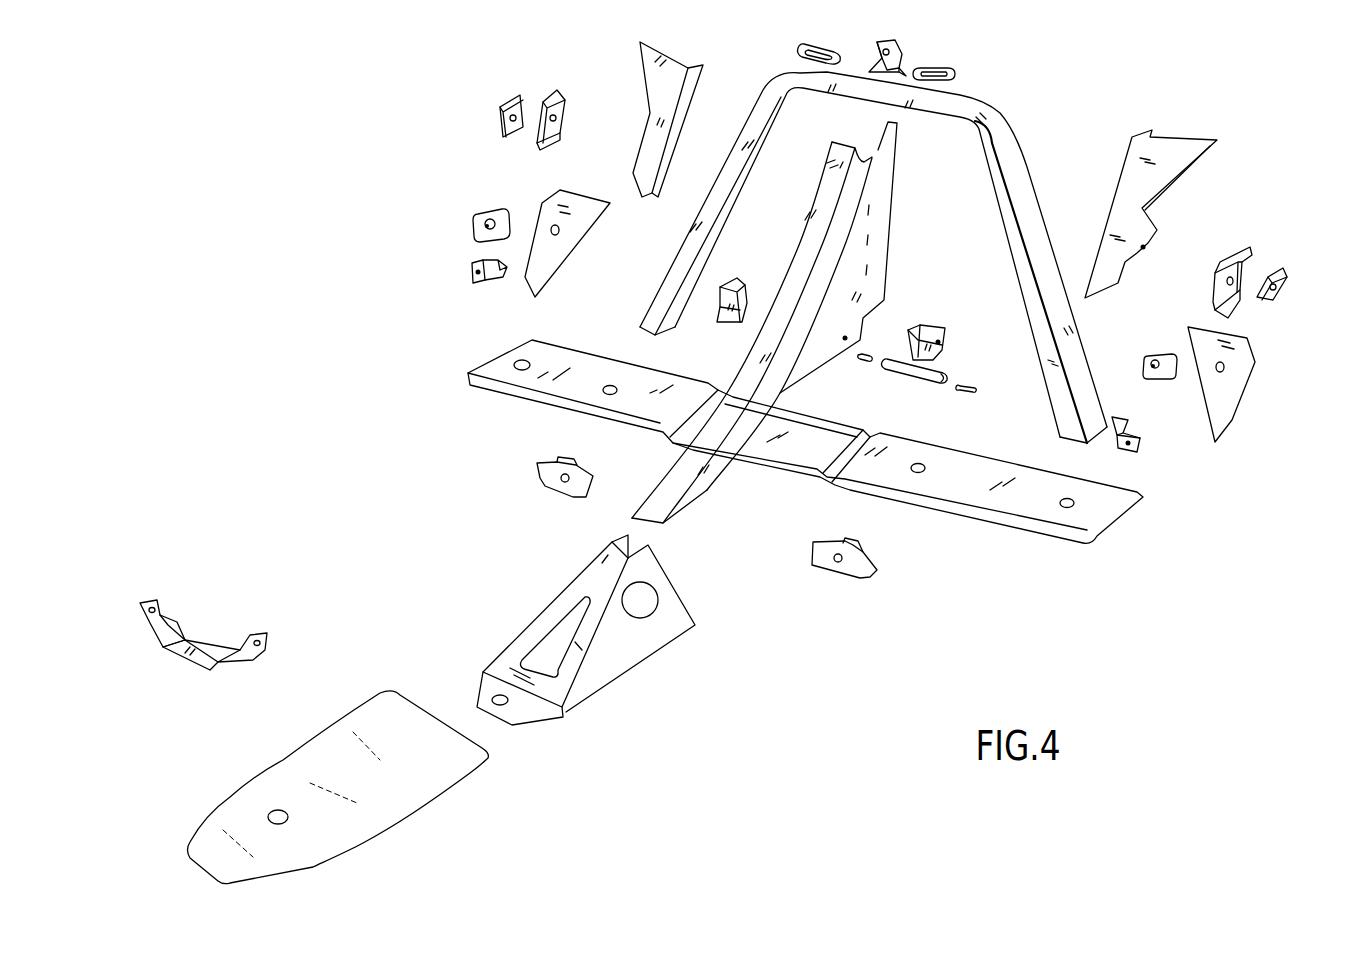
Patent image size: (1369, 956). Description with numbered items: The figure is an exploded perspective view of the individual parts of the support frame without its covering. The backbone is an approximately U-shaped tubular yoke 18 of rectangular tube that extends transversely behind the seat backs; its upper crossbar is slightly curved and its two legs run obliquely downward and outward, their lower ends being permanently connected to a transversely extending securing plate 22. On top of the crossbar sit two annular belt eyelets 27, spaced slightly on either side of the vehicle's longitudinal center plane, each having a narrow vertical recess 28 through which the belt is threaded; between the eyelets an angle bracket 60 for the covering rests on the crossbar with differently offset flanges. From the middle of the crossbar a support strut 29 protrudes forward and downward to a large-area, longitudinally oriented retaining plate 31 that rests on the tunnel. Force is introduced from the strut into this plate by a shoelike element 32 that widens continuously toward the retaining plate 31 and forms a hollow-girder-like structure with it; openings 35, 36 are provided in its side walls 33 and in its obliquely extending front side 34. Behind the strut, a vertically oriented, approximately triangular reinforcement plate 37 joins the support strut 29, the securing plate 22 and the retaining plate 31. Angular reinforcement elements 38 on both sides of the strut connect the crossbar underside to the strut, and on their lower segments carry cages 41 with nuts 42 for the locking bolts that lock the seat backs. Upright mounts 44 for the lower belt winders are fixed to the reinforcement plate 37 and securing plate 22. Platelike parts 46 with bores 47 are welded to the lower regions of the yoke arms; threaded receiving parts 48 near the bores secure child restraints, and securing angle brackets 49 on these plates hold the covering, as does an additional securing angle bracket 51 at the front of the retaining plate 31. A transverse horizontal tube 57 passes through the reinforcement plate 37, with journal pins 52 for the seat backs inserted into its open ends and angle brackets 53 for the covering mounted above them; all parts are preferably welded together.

The tubular yoke 18 is at (1017, 115).
The securing plate 22 is at (1103, 503).
The belt eyelets 27 is at (820, 53).
The vertical recess 28 is at (828, 48).
The support strut 29 is at (820, 210).
The retaining plate 31 is at (357, 697).
The shoelike element 32 is at (596, 624).
The side walls 33 is at (670, 603).
The front side 34 is at (508, 662).
The opening 35 is at (557, 635).
The opening 36 is at (647, 597).
The reinforcement plate 37 is at (887, 187).
The angular reinforcement elements 38 is at (678, 48).
The cages 41 is at (553, 82).
The nuts 42 is at (508, 93).
The upright mounts 44 is at (547, 467).
The platelike parts 46 is at (580, 217).
The bores 47 is at (552, 227).
The receiving part 48 is at (475, 212).
The securing angle brackets 49 is at (470, 287).
The securing angle bracket 51 is at (180, 668).
The journal pins 52 is at (960, 388).
The angle brackets 53 is at (735, 280).
The tube 57 is at (938, 366).
The angle bracket 60 is at (887, 42).